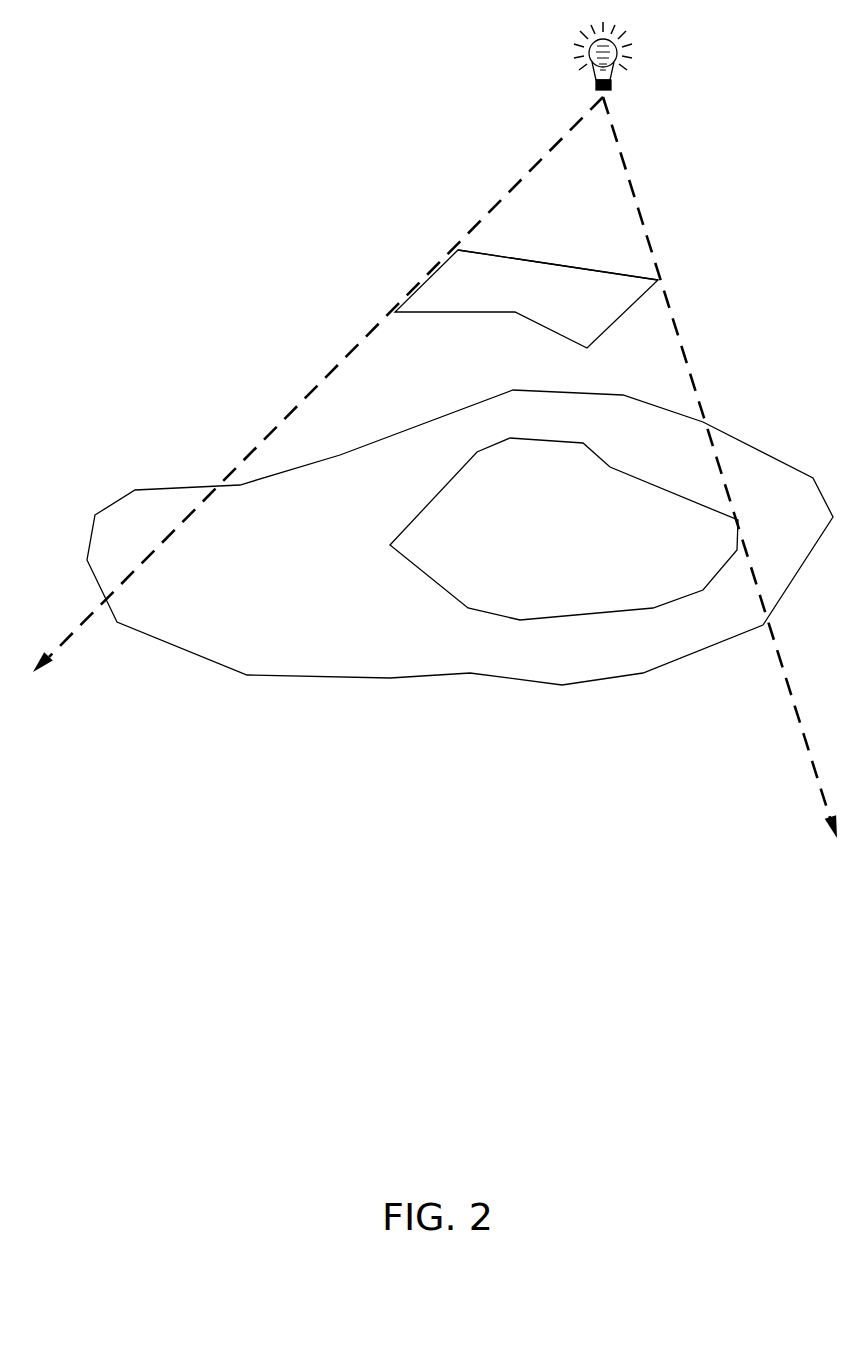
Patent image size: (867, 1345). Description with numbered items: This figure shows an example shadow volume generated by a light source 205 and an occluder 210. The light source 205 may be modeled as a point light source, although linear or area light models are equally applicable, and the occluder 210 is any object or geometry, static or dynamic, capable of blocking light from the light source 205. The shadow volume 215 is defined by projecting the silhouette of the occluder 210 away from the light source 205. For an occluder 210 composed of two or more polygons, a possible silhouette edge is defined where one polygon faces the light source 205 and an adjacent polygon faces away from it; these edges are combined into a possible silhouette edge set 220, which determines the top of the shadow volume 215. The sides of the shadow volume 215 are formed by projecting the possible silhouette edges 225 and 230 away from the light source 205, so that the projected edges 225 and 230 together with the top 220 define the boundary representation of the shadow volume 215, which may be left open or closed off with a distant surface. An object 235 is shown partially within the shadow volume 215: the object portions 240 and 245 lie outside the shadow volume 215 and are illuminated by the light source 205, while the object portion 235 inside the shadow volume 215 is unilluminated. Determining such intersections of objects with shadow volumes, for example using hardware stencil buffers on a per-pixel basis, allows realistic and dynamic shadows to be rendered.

The light source 205 is at (635, 62).
The occluder 210 is at (526, 299).
The shadow volume 215 is at (448, 389).
The possible silhouette edge set 220 is at (518, 258).
The projected possible silhouette edge 225 is at (302, 400).
The projected possible silhouette edge 230 is at (693, 377).
The object 235 is at (350, 613).
The object portion 240 is at (168, 539).
The object portion 245 is at (805, 524).